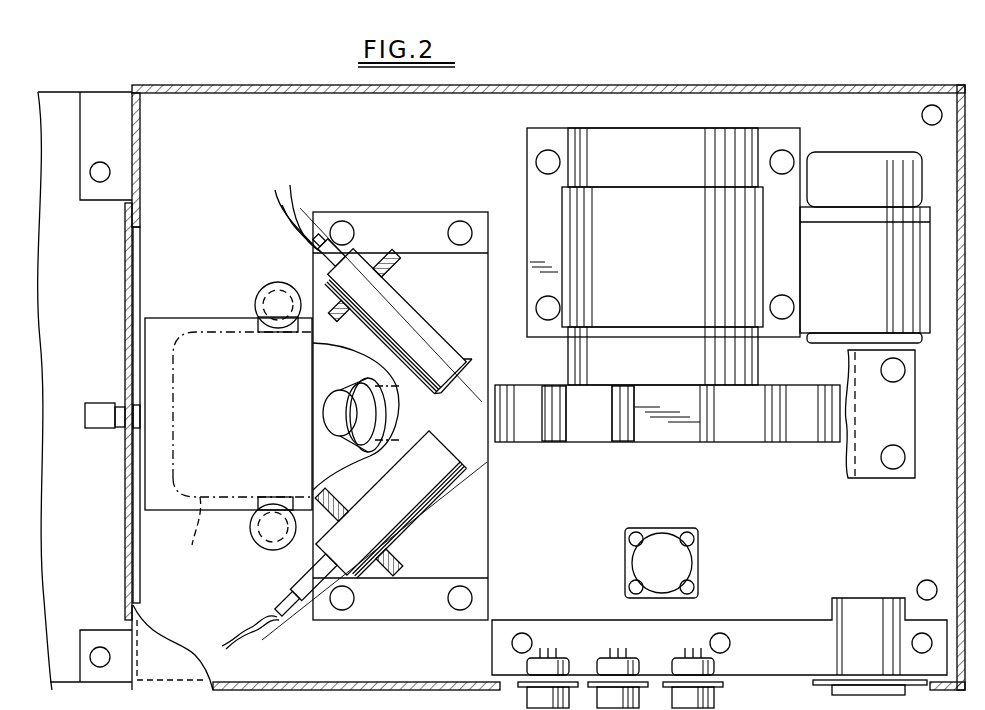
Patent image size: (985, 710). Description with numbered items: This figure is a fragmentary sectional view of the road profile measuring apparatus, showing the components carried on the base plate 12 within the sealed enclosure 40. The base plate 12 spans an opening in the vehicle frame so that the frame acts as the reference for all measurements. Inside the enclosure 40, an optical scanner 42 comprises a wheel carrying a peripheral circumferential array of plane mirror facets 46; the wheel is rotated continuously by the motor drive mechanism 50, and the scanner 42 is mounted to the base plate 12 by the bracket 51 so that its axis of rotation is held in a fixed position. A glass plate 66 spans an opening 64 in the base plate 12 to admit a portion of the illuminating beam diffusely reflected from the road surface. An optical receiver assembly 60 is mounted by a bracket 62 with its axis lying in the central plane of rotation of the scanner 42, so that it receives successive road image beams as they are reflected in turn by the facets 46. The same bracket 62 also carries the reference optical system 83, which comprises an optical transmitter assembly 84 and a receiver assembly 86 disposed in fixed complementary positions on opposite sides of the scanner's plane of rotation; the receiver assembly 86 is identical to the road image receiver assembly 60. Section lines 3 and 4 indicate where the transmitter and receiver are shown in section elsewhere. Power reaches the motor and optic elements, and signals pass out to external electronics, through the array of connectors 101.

The section line 3- 3 is at (468, 441).
The section line 4- 4 is at (311, 261).
The base plate 12 is at (56, 541).
The sealed enclosure 40 is at (914, 86).
The optical scanner 42 is at (778, 444).
The mirror facets 46 is at (654, 442).
The motor drive mechanism 50 is at (642, 184).
The bracket 51 is at (803, 145).
The optical receiver assembly 60 is at (320, 413).
The bracket 62 is at (441, 213).
The opening 64 is at (192, 532).
The glass plate 66 is at (234, 348).
The reference optical system 83 is at (281, 556).
The optical transmitter assembly 84 is at (448, 490).
The receiver assembly 86 is at (452, 332).
The connectors 101 is at (823, 596).